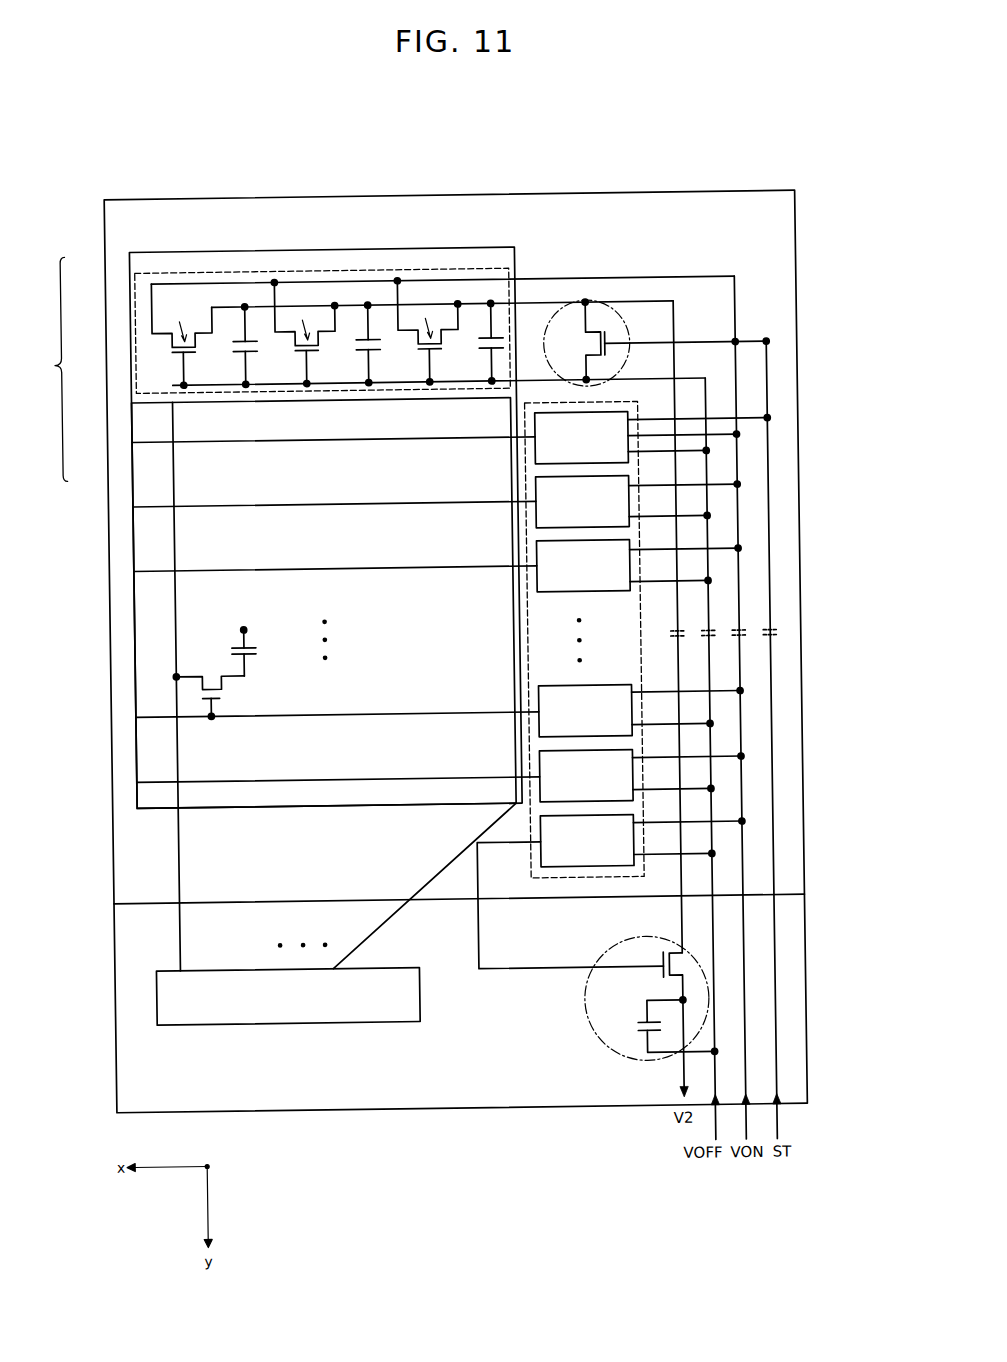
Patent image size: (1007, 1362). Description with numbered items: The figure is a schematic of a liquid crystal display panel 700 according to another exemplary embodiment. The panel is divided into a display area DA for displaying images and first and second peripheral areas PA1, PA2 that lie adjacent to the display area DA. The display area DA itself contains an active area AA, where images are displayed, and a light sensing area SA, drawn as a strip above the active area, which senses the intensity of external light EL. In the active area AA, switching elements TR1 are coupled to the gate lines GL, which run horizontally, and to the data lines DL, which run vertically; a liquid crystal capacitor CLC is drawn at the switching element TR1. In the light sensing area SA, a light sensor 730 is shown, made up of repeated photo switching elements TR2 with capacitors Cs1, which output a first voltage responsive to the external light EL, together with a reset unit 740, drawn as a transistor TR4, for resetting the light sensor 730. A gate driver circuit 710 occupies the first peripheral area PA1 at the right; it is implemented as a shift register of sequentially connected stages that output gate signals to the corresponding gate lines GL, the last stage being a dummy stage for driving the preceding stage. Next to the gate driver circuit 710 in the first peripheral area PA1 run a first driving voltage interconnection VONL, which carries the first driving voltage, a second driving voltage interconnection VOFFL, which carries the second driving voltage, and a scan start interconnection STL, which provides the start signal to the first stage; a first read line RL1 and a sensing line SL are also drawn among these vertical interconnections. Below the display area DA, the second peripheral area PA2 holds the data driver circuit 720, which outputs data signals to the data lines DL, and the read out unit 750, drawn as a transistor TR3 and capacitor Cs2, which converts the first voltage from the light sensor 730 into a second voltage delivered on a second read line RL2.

The liquid crystal display panel 700 is at (346, 138).
The gate driver circuit 710 is at (641, 612).
The data driver circuit 720 is at (282, 1021).
The light sensor 730 is at (468, 270).
The reset unit 740 is at (655, 273).
The read out unit 750 is at (729, 1015).
The light sensing area SA is at (134, 257).
The display area DA is at (47, 369).
The active area AA is at (215, 476).
The first peripheral area PA1 is at (789, 537).
The second peripheral area PA2 is at (130, 1006).
The external light EL is at (184, 314).
The switching element TR1 is at (209, 685).
The photo switching element TR2 is at (302, 333).
The third transistor TR3 is at (657, 1014).
The fourth transistor TR4 is at (659, 340).
The first storage capacitor Cs1 is at (356, 344).
The second storage capacitor Cs2 is at (660, 1026).
The liquid crystal capacitor CLC is at (259, 651).
The gate lines GL is at (336, 598).
The data lines DL is at (176, 944).
The first read line RL1 is at (681, 673).
The second read line RL2 is at (676, 1075).
The sensing line SL is at (687, 778).
The second driving voltage interconnection VOFFL is at (712, 878).
The first driving voltage interconnection VONL is at (742, 945).
The scan start interconnection STL is at (777, 1049).